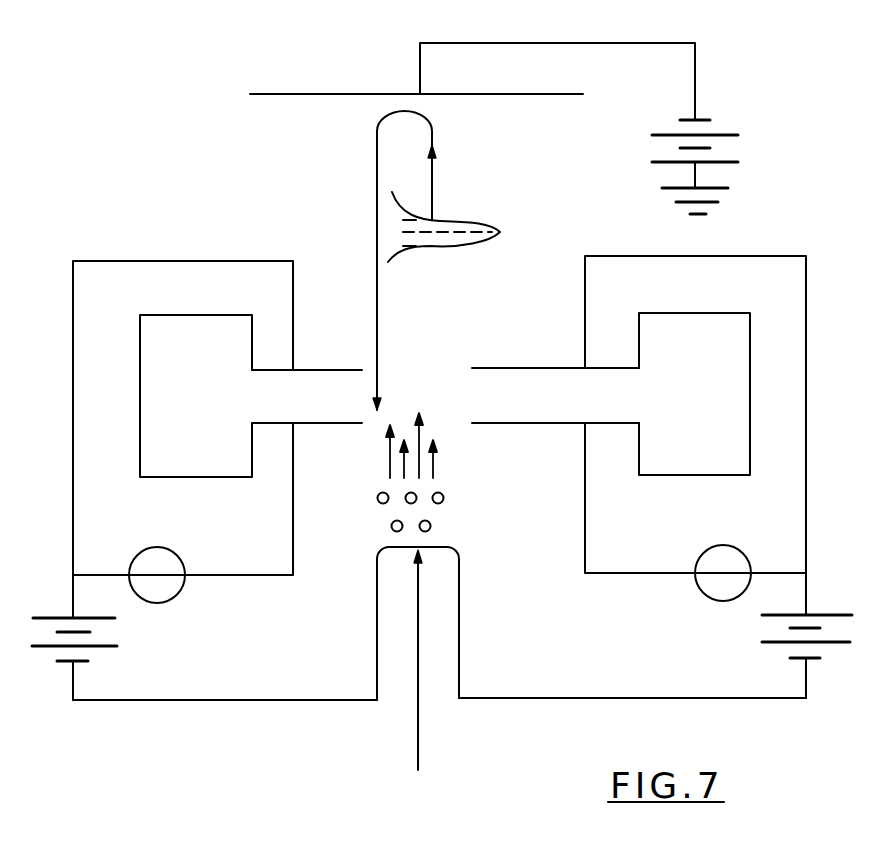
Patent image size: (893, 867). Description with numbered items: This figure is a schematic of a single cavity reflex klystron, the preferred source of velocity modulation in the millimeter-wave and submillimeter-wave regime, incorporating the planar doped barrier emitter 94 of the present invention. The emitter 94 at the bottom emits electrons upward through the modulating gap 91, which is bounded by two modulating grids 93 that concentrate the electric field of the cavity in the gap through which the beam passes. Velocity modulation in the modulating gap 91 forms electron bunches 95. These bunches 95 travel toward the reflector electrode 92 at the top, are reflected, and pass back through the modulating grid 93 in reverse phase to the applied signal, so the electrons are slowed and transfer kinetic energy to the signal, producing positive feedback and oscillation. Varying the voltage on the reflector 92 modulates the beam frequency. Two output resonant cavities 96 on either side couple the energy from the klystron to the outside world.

The modulating gap 91 is at (445, 403).
The reflector electrode 92 is at (310, 94).
The modulating grid 93 is at (317, 368).
The planar doped barrier emitter 94 is at (462, 640).
The electron bunches 95 is at (493, 222).
The output resonant cavity 96 is at (199, 313).